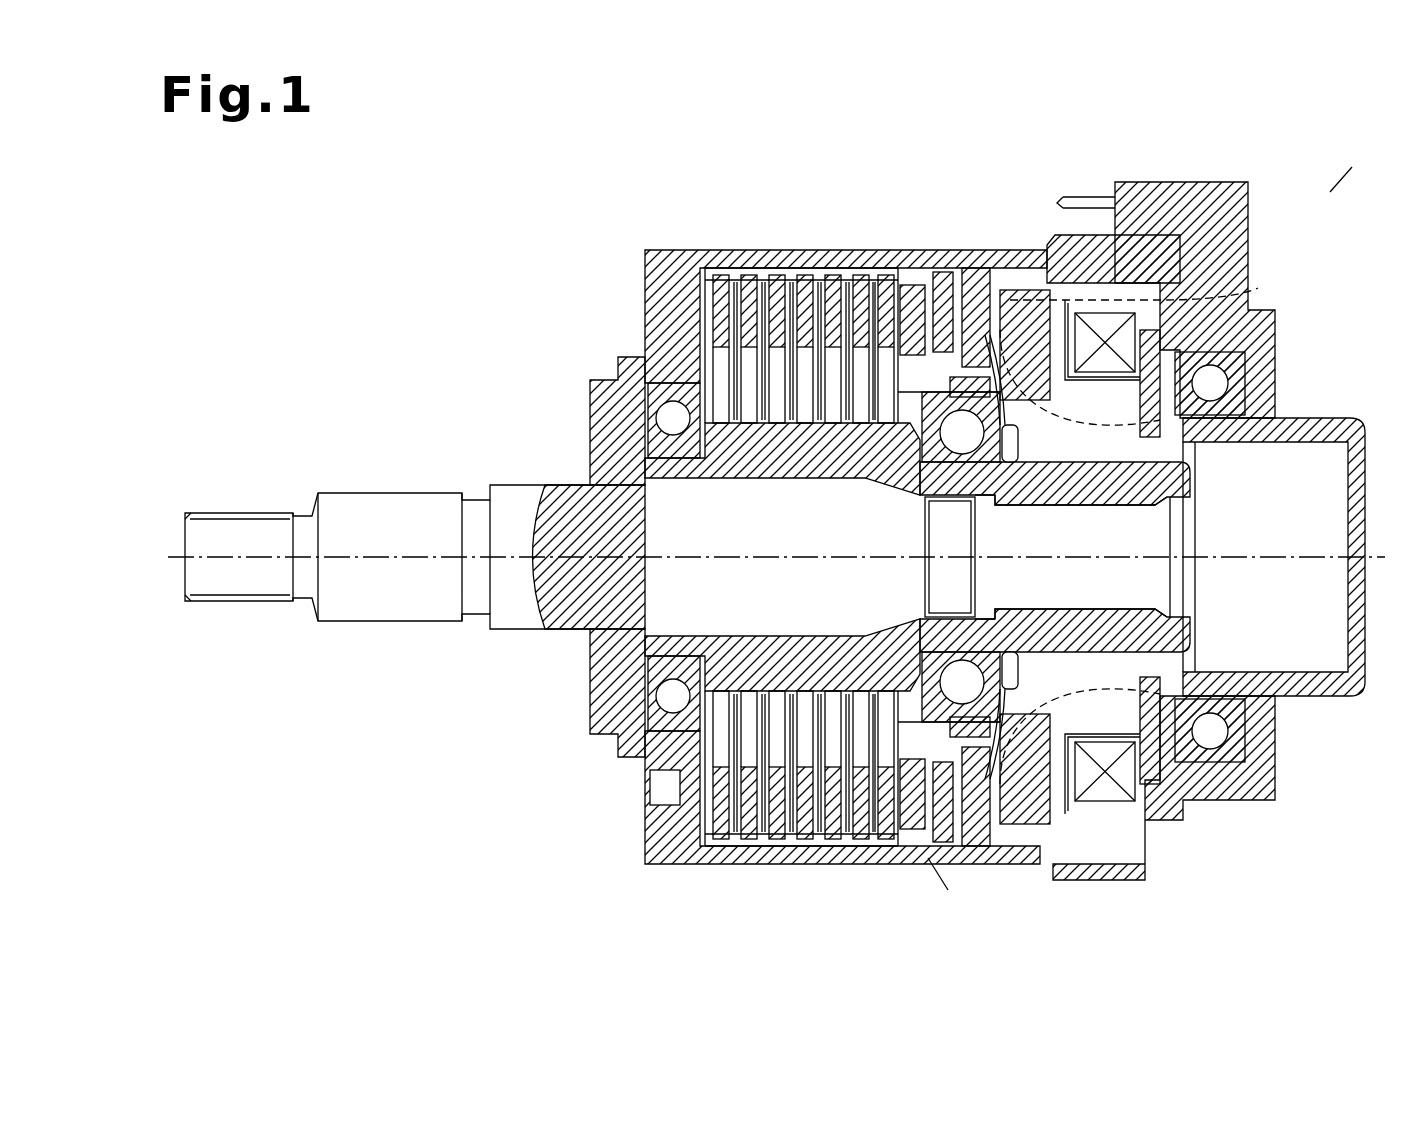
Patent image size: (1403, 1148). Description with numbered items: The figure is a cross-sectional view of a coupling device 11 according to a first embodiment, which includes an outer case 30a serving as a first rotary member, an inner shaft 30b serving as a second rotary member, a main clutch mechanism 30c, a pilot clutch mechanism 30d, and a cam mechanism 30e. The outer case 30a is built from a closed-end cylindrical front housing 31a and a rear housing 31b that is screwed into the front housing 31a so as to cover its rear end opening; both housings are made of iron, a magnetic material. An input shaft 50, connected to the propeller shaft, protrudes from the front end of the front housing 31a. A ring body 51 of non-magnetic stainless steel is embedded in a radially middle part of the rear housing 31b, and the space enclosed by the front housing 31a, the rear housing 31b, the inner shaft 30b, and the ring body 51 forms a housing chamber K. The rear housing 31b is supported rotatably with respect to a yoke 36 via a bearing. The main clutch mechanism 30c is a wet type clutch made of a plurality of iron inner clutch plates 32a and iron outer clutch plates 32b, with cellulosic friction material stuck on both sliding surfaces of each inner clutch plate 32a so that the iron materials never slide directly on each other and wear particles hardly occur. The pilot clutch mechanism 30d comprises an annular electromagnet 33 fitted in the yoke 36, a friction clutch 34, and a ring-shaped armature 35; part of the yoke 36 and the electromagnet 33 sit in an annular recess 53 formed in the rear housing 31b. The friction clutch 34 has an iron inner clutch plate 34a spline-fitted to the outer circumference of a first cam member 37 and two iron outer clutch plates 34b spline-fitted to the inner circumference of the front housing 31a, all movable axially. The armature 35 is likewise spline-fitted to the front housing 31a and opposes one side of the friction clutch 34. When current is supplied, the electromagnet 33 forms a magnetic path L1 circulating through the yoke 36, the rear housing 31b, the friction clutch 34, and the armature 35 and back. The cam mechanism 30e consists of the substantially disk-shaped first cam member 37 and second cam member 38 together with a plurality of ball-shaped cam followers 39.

The coupling device 11 is at (1325, 197).
The outer case 30a is at (722, 258).
The inner shaft 30b is at (780, 460).
The main clutch mechanism 30c is at (858, 252).
The pilot clutch mechanism 30d is at (1053, 322).
The cam mechanism 30e is at (916, 458).
The front housing 31a is at (657, 256).
The rear housing 31b is at (1165, 255).
The inner clutch plates 32a is at (818, 395).
The outer clutch plates 32b is at (757, 300).
The electromagnet 33 is at (1135, 392).
The friction clutch 34 is at (990, 254).
The inner clutch plate 34a is at (1035, 388).
The outer clutch plates 34b is at (962, 300).
The armature 35 is at (950, 290).
The yoke 36 is at (1265, 785).
The first cam member 37 is at (1012, 506).
The second cam member 38 is at (910, 290).
The cam followers 39 is at (944, 510).
The input shaft 50 is at (240, 520).
The ring body 51 is at (988, 340).
The annular recess 53 is at (1110, 382).
The housing chamber K is at (926, 855).
The magnetic path L1 is at (1155, 288).